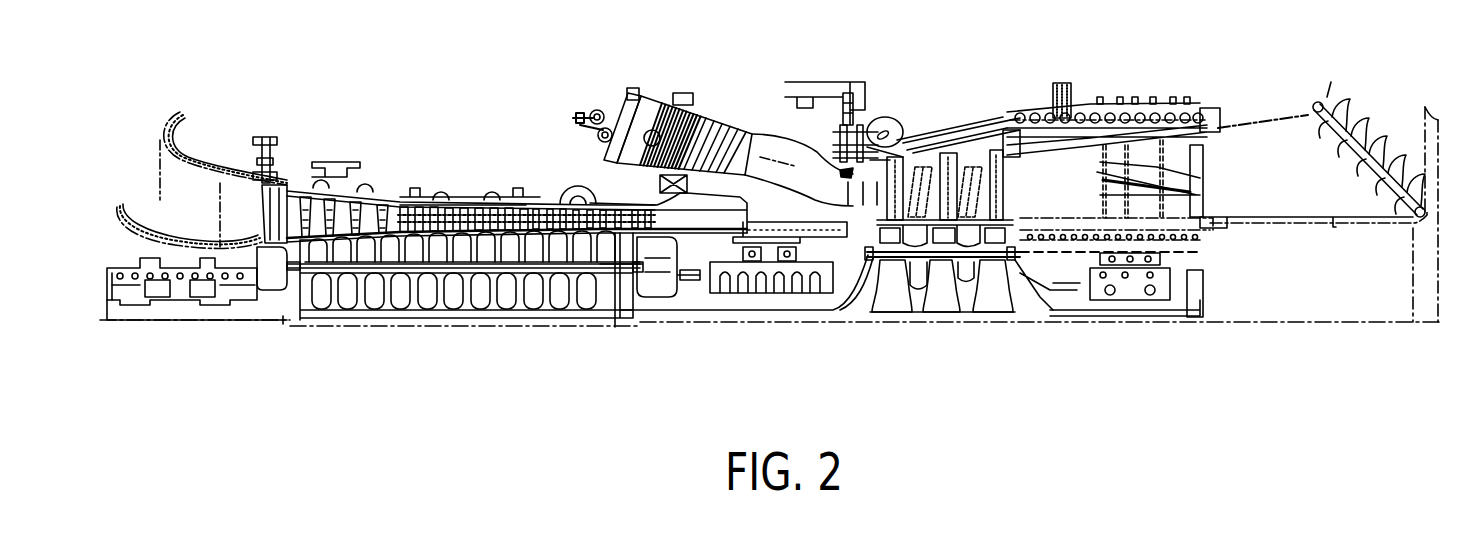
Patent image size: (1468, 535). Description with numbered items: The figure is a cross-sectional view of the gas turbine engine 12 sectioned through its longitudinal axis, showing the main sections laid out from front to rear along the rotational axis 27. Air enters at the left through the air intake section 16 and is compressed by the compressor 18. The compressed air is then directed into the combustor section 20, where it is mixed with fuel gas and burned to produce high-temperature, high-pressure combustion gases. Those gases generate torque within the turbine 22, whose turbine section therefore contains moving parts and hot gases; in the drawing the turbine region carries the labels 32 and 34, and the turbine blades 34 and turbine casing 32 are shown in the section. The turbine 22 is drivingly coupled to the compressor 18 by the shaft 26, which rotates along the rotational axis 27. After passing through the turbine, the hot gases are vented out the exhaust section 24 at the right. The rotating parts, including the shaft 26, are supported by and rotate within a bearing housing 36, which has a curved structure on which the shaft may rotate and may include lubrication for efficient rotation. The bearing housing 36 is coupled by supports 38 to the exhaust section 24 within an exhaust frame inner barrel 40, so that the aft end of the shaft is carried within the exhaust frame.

The gas turbine engine 12 is at (692, 356).
The air intake section 16 is at (177, 213).
The compressor 18 is at (581, 177).
The combustor section 20 is at (847, 105).
The turbine 22 is at (977, 70).
The exhaust section 24 is at (1427, 68).
The shaft 26 is at (1007, 258).
The rotational axis 27 is at (1190, 253).
The turbine casing 32 is at (946, 173).
The turbine blades 34 is at (993, 297).
The bearing housing 36 is at (1173, 262).
The supports 38 is at (1163, 262).
The exhaust frame inner barrel 40 is at (1202, 228).